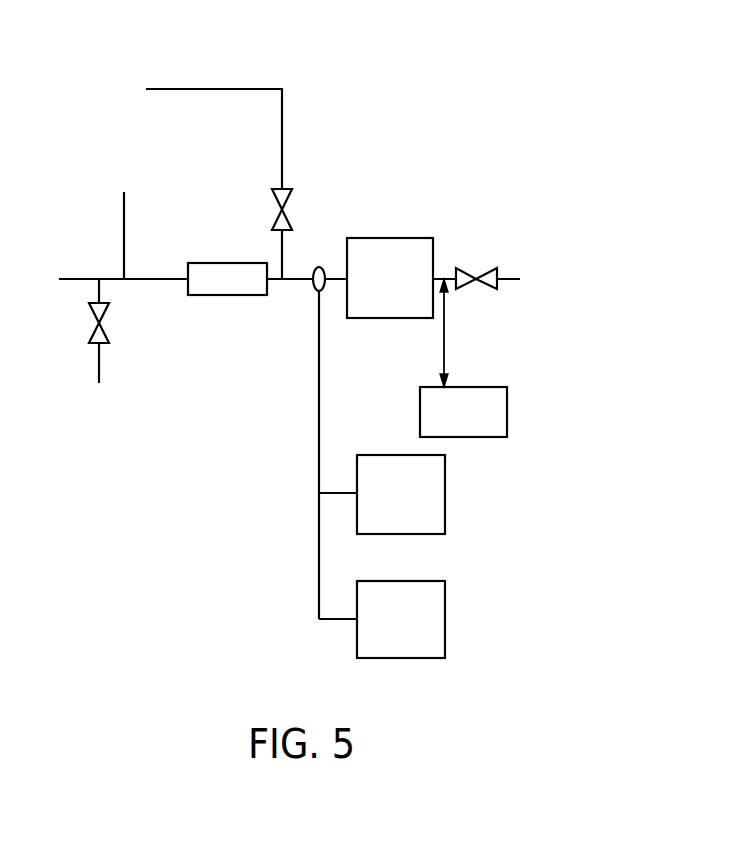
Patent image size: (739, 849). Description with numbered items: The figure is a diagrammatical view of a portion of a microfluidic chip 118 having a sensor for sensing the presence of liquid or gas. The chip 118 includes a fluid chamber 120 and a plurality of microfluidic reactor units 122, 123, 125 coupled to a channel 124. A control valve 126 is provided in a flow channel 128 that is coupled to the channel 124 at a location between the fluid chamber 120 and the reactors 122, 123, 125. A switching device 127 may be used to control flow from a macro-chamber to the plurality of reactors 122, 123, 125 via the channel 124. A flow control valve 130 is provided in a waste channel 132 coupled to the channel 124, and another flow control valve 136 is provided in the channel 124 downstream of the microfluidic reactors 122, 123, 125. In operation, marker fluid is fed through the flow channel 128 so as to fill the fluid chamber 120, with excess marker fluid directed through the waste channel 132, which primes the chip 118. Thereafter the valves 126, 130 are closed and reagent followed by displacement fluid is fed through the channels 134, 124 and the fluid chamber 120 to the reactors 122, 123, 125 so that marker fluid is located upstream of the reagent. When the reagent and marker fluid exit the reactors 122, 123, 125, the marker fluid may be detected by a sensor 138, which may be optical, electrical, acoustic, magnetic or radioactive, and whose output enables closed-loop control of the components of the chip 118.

The microfluidic chip 118 is at (508, 56).
The fluid chamber 120 is at (248, 297).
The microfluidic reactor unit 122 is at (390, 238).
The microfluidic reactor unit 123 is at (445, 494).
The channel 124 is at (145, 277).
The microfluidic reactor unit 125 is at (445, 620).
The control valve 126 is at (291, 200).
The switching device 127 is at (317, 265).
The flow channel 128 is at (282, 116).
The flow control valve 130 is at (104, 313).
The waste channel 132 is at (99, 362).
The channel 134 is at (124, 221).
The flow control valve 136 is at (488, 268).
The sensor 138 is at (507, 412).